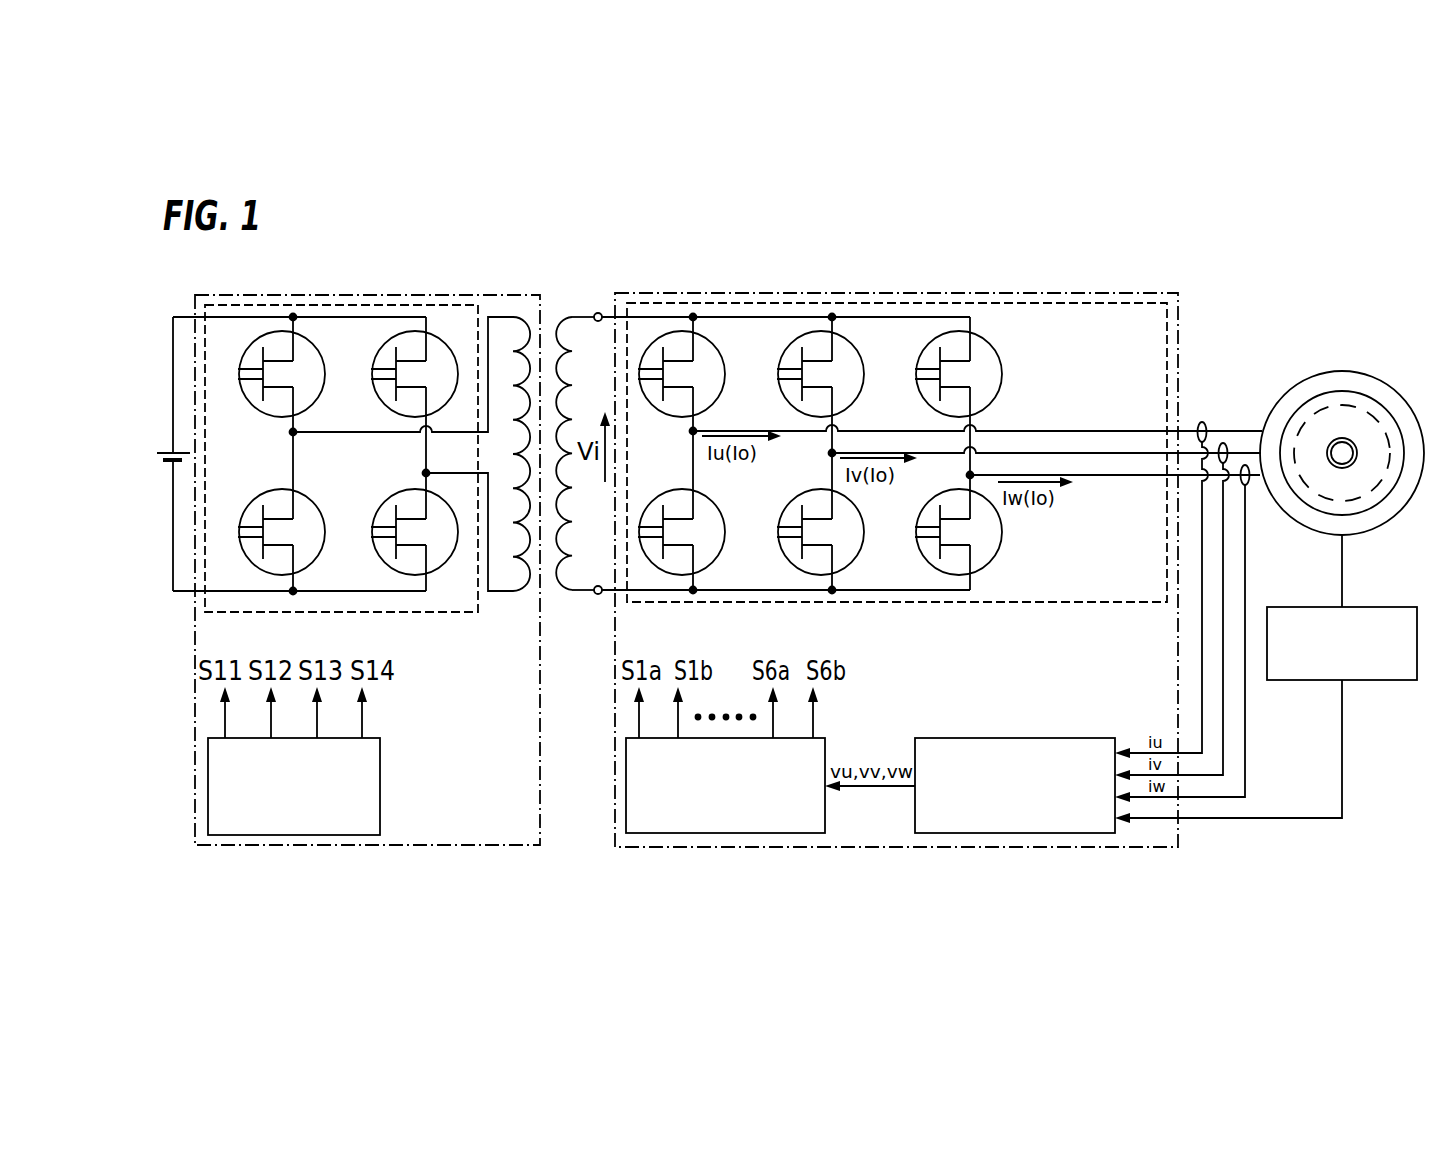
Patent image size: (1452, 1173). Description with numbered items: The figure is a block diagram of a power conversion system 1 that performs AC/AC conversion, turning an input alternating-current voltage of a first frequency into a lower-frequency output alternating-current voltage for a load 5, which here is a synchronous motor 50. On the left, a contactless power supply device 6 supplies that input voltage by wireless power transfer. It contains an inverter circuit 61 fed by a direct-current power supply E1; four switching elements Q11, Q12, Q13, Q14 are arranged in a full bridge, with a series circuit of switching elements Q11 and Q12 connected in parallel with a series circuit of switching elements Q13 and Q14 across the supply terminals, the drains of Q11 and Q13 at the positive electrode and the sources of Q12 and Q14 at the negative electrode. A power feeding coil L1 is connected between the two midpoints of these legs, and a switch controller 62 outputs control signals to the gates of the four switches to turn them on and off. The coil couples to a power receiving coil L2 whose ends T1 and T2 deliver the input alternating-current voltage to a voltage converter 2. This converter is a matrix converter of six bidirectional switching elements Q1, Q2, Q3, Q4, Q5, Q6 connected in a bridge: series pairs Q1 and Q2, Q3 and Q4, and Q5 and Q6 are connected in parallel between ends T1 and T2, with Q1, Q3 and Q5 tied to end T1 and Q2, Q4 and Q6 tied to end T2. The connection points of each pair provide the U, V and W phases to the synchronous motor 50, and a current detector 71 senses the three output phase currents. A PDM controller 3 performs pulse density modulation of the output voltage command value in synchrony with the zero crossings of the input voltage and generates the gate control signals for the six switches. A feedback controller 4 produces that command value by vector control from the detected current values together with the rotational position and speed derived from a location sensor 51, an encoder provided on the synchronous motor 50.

The power conversion system 1 is at (1098, 293).
The voltage converter 2 is at (1072, 302).
The PDM controller 3 is at (825, 820).
The feedback controller 4 is at (915, 817).
The load 5 is at (1342, 432).
The synchronous motor 50 is at (1342, 371).
The location sensor 51 is at (1387, 680).
The contactless power supply device 6 is at (465, 293).
The inverter circuit 61 is at (425, 305).
The switch controller 62 is at (380, 775).
The current detector 71 is at (1208, 409).
The direct-current power supply E1 is at (165, 445).
The power feeding coil L1 is at (512, 594).
The power receiving coil L2 is at (562, 594).
The one end of the power receiving coil T1 is at (597, 312).
The other end of the power receiving coil T2 is at (599, 595).
The switching element Q1 is at (666, 414).
The switching element Q2 is at (713, 500).
The switching element Q3 is at (780, 356).
The switching element Q4 is at (789, 562).
The switching element Q5 is at (921, 352).
The switching element Q6 is at (918, 550).
The switching element Q11 is at (252, 406).
The switching element Q12 is at (268, 490).
The switching element Q13 is at (383, 345).
The switching element Q14 is at (397, 490).